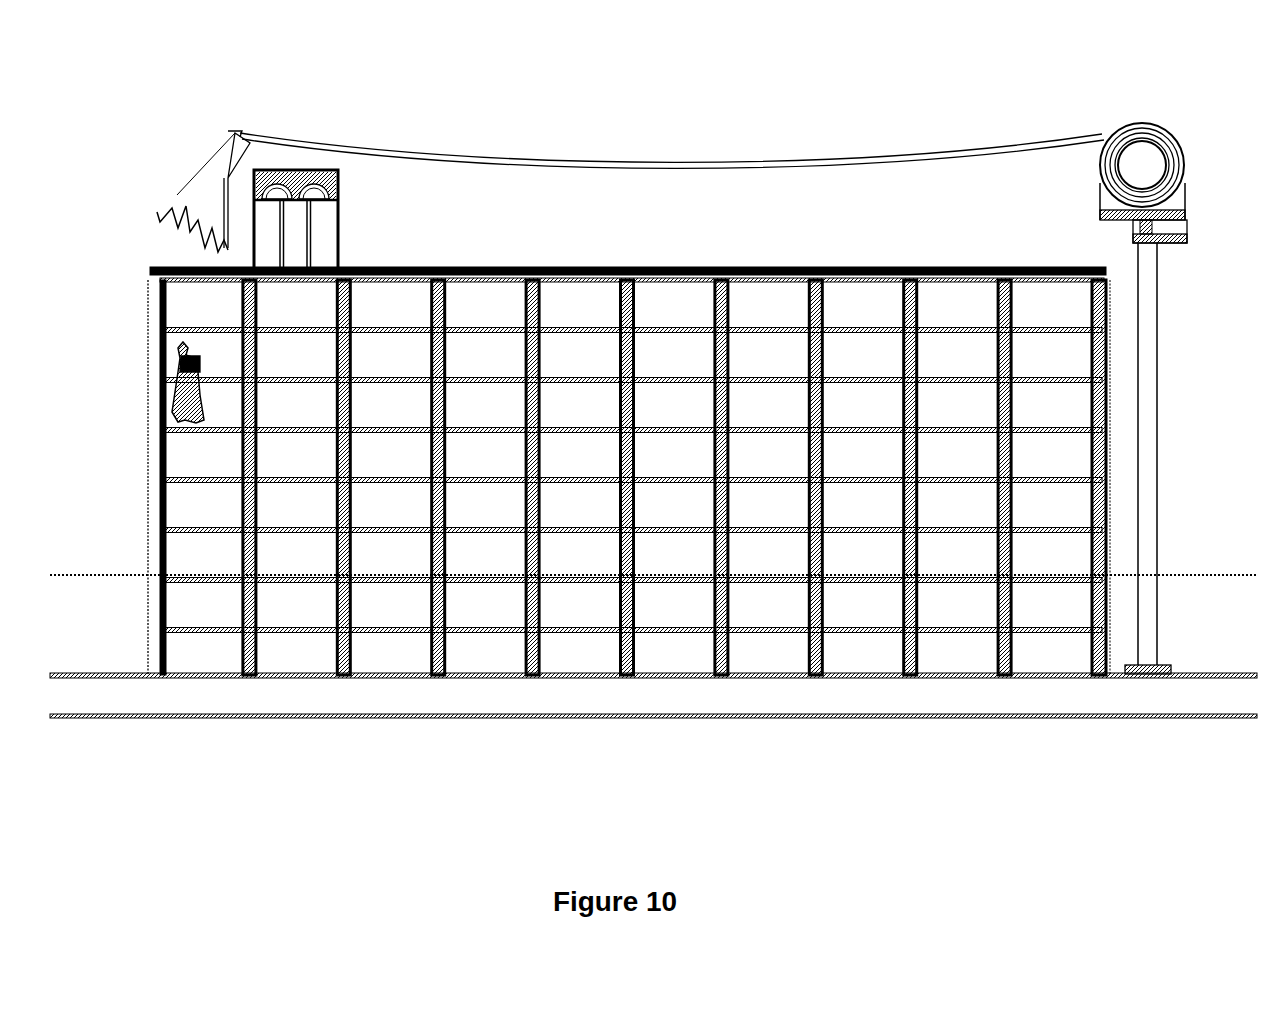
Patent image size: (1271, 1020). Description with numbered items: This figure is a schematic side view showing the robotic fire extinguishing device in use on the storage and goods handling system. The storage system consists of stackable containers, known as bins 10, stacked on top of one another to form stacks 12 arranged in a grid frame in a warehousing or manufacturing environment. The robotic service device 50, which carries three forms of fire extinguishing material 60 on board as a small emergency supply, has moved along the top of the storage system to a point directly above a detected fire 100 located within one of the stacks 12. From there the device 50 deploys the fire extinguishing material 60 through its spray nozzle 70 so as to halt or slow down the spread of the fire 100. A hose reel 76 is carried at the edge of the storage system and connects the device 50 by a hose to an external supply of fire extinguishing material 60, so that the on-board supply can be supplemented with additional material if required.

The bin 10 is at (195, 490).
The stack 12 is at (165, 577).
The robotic service device 50 is at (300, 168).
The fire extinguishing material 60 is at (177, 195).
The spray nozzle 70 is at (222, 150).
The hose reel 76 is at (1146, 168).
The fire 100 is at (168, 408).